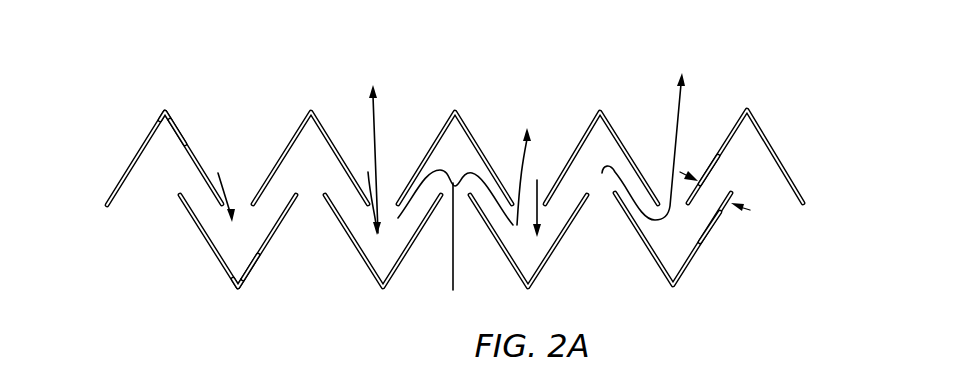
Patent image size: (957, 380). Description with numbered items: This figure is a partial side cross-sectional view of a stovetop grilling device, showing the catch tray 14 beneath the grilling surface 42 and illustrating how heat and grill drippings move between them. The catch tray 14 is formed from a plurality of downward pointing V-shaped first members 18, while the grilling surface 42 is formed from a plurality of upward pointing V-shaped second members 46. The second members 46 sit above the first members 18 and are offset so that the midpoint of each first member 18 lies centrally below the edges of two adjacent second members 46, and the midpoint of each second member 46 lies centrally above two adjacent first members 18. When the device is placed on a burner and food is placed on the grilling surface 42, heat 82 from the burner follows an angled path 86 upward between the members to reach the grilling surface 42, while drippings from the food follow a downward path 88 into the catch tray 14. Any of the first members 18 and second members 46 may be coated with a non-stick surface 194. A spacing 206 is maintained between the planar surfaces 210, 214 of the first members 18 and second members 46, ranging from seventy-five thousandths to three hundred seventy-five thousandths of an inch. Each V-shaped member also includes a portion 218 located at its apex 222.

The catch tray 14 is at (262, 262).
The first member 18 is at (693, 262).
The grilling surface 42 is at (455, 108).
The second member 46 is at (797, 173).
The heat 82 is at (453, 268).
The angled path 86 is at (217, 173).
The downward path 88 is at (244, 222).
The non-stick surface 194 is at (142, 142).
The spacing 206 is at (715, 193).
The planar surface 210 is at (720, 217).
The planar surface 214 is at (712, 153).
The portion 218 is at (167, 108).
The apex 222 is at (165, 108).